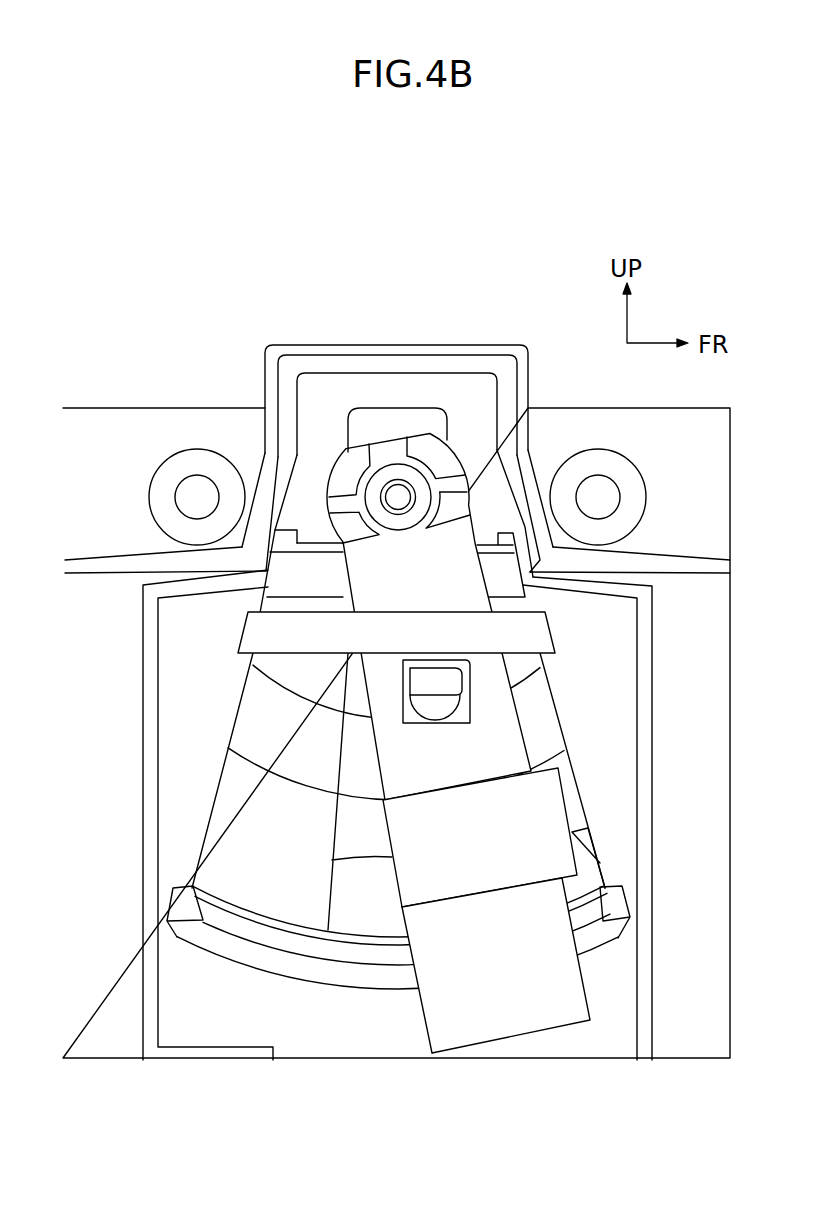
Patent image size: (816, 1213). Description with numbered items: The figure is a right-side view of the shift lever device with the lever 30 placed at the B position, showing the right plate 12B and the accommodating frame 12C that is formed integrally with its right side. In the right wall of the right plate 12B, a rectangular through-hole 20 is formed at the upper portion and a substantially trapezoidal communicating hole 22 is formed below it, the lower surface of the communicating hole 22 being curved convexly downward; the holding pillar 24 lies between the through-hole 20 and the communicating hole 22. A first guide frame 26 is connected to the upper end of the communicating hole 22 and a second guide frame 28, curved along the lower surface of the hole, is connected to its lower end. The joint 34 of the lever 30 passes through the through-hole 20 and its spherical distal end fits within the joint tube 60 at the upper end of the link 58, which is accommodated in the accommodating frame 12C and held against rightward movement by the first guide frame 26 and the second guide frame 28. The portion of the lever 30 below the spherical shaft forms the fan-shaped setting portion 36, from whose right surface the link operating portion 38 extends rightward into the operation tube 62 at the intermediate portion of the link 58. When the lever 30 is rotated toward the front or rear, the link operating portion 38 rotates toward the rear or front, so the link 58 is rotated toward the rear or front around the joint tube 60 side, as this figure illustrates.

The right plate 12B is at (128, 409).
The accommodating frame 12C is at (530, 374).
The through-hole 20 is at (437, 407).
The communicating hole 22 is at (206, 826).
The holding pillar 24 is at (300, 570).
The first guide frame 26 is at (247, 630).
The second guide frame 28 is at (240, 905).
The lever 30 is at (333, 808).
The joint 34 is at (396, 462).
The setting portion 36 is at (332, 848).
The link operating portion 38 is at (466, 718).
The link 58 is at (421, 1014).
The joint tube 60 is at (355, 473).
The operation tube 62 is at (410, 722).